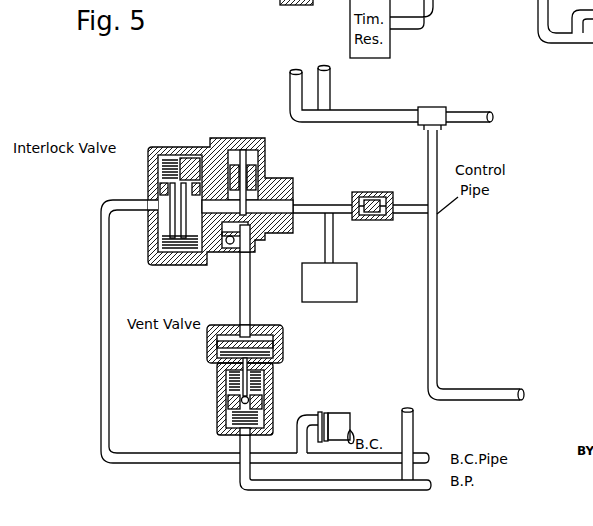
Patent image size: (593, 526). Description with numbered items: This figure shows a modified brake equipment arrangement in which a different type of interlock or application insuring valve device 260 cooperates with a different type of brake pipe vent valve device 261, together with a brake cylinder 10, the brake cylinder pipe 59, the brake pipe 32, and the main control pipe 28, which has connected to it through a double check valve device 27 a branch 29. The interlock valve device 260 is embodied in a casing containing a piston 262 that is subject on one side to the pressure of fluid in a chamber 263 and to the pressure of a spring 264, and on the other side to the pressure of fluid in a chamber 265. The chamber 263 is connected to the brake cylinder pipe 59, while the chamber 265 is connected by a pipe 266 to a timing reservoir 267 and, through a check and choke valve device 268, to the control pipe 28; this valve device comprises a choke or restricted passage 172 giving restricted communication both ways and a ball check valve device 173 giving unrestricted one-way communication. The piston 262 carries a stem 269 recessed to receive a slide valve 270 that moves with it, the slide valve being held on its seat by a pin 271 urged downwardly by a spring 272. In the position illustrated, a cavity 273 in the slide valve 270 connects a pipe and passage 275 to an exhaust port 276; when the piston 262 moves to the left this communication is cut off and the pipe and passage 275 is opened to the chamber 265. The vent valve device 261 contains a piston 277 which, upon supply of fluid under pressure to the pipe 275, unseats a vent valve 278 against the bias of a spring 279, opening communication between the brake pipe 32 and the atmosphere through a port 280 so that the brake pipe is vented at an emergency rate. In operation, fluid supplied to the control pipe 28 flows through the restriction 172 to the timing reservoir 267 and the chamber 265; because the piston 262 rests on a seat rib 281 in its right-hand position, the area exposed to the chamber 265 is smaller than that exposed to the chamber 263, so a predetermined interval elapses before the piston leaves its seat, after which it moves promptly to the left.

The brake cylinder 10 is at (333, 412).
The double check valve device 27 is at (426, 108).
The main control pipe 28 is at (437, 291).
The branch 29 is at (332, 88).
The brake pipe 32 is at (413, 433).
The brake cylinder pipe 59 is at (162, 458).
The choke 172 is at (375, 218).
The ball check valve device 173 is at (360, 216).
The interlock valve device 260 is at (213, 193).
The vent valve device 261 is at (238, 380).
The piston 262 is at (198, 147).
The chamber 263 is at (162, 265).
The spring 264 is at (160, 244).
The chamber 265 is at (265, 186).
The pipe 266 is at (312, 205).
The timing reservoir 267 is at (341, 302).
The check and choke valve device 268 is at (378, 210).
The stem 269 is at (295, 179).
The slide valve 270 is at (284, 220).
The pin 271 is at (263, 165).
The spring 272 is at (247, 150).
The cavity 273 is at (276, 240).
The pipe and passage 275 is at (255, 252).
The exhaust port 276 is at (228, 250).
The piston 277 is at (285, 342).
The vent valve 278 is at (224, 402).
The spring 279 is at (225, 416).
The port 280 is at (217, 370).
The seat rib 281 is at (199, 147).